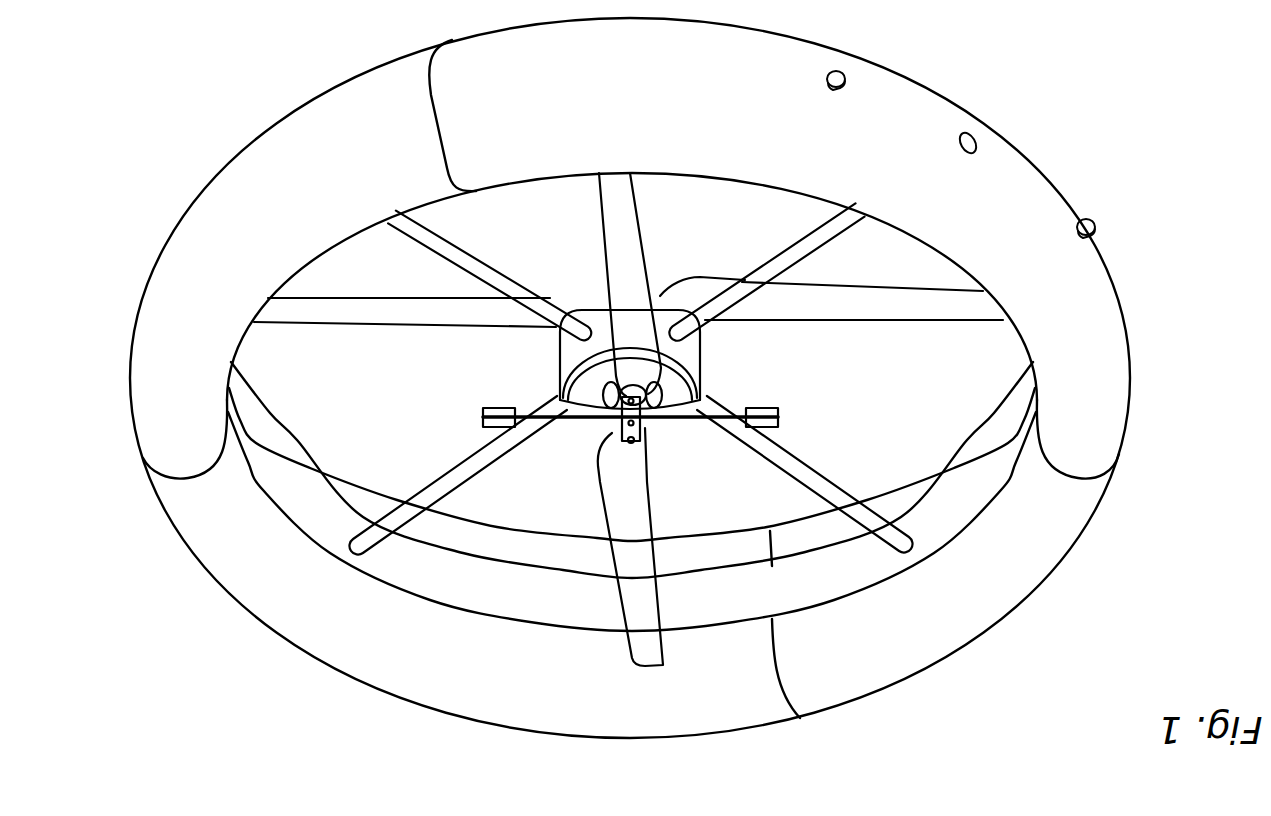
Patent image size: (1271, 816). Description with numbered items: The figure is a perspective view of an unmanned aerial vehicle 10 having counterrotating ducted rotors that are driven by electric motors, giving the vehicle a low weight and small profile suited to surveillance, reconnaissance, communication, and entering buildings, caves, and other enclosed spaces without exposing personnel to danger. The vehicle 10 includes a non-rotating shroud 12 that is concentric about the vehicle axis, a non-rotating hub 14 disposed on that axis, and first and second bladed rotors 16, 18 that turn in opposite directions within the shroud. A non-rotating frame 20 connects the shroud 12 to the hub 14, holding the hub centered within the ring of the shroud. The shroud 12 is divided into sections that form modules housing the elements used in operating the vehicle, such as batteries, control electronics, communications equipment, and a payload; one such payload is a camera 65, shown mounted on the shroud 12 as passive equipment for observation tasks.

The unmanned aerial vehicle 10 is at (289, 718).
The non-rotating shroud 12 is at (955, 653).
The non-rotating hub 14 is at (703, 358).
The first bladed rotor 16 is at (657, 497).
The second bladed rotor 18 is at (413, 325).
The non-rotating frame 20 is at (443, 477).
The camera 65 is at (845, 72).